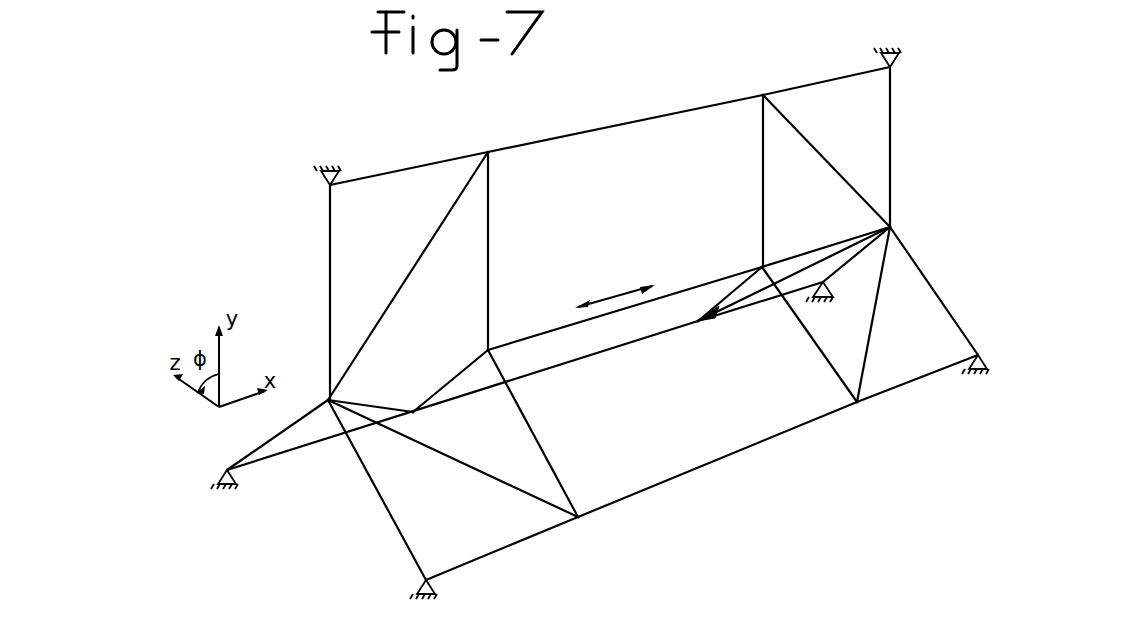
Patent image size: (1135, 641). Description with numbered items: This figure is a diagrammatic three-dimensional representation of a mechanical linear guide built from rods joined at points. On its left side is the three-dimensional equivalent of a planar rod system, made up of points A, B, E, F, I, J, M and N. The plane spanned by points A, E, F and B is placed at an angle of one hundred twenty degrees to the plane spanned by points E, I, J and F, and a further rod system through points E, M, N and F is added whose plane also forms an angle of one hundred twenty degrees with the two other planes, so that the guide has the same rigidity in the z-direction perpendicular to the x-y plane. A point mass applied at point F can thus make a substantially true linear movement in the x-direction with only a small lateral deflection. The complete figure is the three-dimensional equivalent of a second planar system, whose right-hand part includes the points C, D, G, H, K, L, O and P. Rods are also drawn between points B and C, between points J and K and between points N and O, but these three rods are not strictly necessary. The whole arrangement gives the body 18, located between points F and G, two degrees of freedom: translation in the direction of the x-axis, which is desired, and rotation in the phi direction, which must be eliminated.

The body 18 is at (637, 274).
The point A is at (317, 162).
The point B is at (487, 137).
The point C is at (756, 81).
The point D is at (901, 63).
The point E is at (315, 392).
The point F is at (474, 338).
The point G is at (776, 255).
The point H is at (905, 219).
The point I is at (429, 594).
The point J is at (581, 537).
The point K is at (868, 420).
The point L is at (987, 366).
The point M is at (220, 466).
The point N is at (424, 426).
The point O is at (698, 335).
The point P is at (830, 287).